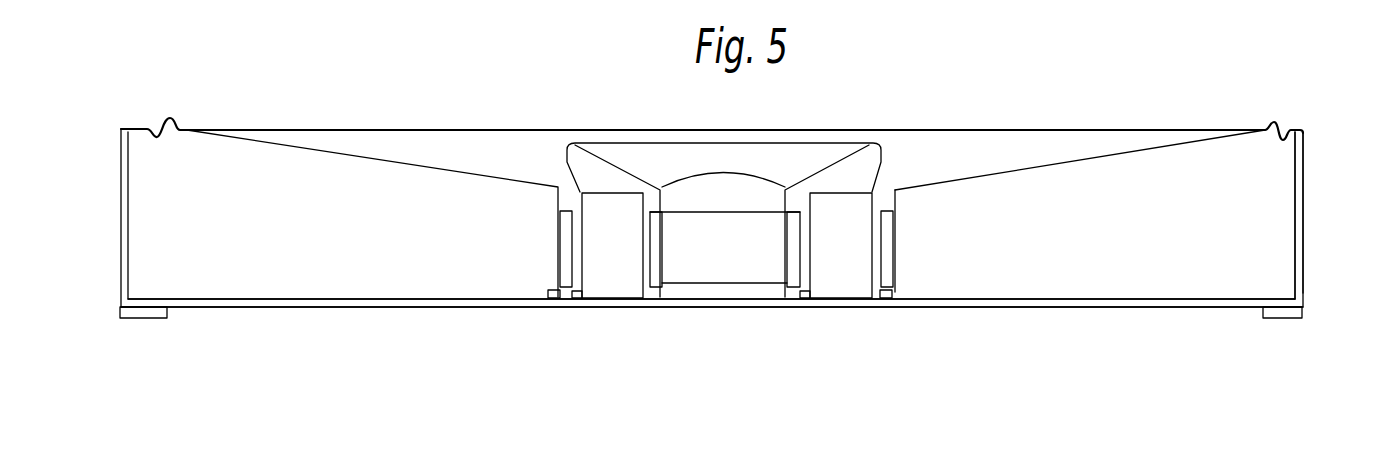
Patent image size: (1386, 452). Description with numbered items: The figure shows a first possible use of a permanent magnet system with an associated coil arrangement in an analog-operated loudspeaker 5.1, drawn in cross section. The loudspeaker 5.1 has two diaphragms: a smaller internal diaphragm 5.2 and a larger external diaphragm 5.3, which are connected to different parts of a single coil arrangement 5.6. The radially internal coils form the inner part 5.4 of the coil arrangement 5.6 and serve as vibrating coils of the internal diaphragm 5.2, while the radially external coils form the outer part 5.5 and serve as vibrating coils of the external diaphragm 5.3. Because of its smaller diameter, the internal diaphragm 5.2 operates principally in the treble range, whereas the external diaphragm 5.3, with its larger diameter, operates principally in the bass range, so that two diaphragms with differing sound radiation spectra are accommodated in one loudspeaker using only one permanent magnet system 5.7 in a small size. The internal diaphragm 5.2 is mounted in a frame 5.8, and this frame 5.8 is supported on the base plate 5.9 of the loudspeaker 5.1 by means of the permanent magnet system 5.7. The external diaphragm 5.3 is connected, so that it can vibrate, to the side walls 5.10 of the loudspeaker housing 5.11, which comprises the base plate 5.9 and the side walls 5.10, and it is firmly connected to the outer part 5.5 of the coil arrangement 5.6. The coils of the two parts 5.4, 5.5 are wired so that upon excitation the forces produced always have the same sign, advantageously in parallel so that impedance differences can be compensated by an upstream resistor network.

The loudspeaker 5.1 is at (1227, 180).
The internal diaphragm 5.2 is at (828, 165).
The external diaphragm 5.3 is at (1060, 163).
The inner part of the coil arrangement 5.4 is at (656, 275).
The outer part of the coil arrangement 5.5 is at (555, 275).
The coil arrangement 5.6 is at (653, 292).
The permanent magnet system 5.7 is at (847, 290).
The frame 5.8 is at (883, 172).
The base plate 5.9 is at (513, 307).
The side walls 5.10 is at (1305, 177).
The loudspeaker housing 5.11 is at (1303, 291).